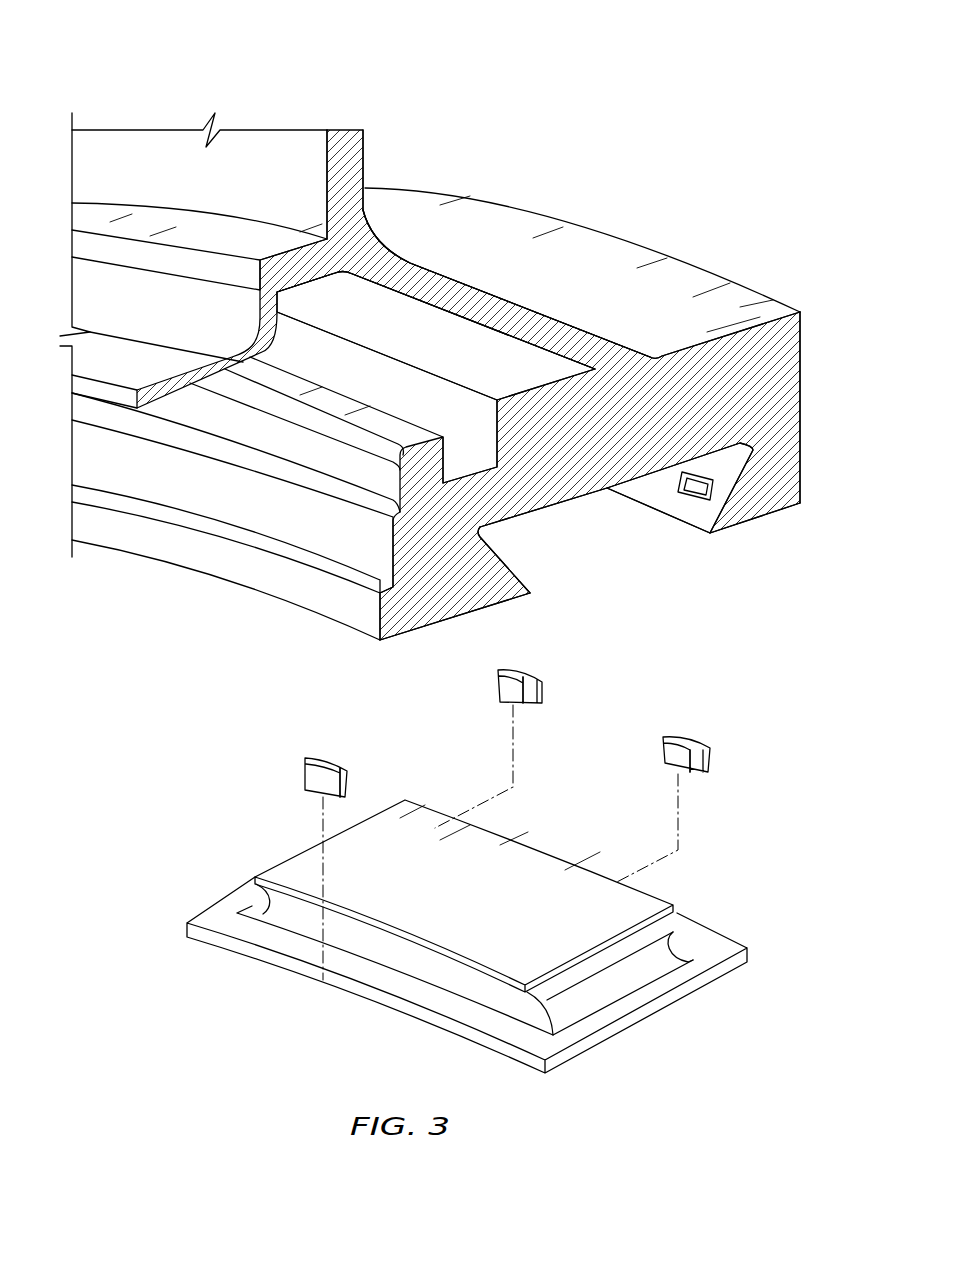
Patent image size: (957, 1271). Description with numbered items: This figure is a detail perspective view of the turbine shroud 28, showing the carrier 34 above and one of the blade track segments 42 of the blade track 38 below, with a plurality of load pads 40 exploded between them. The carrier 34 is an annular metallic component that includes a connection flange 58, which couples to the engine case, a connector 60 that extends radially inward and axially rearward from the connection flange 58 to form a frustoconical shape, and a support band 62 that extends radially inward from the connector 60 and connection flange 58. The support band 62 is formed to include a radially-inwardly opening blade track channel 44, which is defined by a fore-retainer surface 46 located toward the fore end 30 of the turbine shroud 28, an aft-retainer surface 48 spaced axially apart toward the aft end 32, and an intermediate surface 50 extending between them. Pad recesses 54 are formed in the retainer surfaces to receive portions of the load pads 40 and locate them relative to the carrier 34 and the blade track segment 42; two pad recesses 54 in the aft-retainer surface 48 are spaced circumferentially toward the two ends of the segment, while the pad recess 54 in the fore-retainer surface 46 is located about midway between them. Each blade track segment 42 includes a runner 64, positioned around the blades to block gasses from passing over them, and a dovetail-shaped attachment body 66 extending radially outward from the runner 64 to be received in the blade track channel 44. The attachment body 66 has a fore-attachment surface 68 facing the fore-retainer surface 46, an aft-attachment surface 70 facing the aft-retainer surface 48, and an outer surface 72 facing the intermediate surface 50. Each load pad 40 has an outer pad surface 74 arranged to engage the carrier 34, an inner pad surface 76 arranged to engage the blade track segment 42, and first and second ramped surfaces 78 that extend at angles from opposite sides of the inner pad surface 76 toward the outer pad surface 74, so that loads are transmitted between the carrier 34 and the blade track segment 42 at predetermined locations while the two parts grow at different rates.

The turbine shroud 28 is at (722, 188).
The fore end 30 is at (262, 601).
The aft end 32 is at (826, 452).
The carrier 34 is at (551, 305).
The blade track 38 is at (180, 840).
The load pads 40 is at (505, 789).
The blade track segments 42 is at (263, 827).
The blade track channel 44 is at (612, 545).
The fore-retainer surface 46 is at (522, 578).
The aft-retainer surface 48 is at (653, 490).
The intermediate surface 50 is at (561, 500).
The pad recess 54 is at (690, 490).
The connection flange 58 is at (365, 153).
The connector 60 is at (477, 287).
The support band 62 is at (757, 524).
The runner 64 is at (737, 946).
The attachment body 66 is at (640, 968).
The fore-attachment surface 68 is at (440, 970).
The aft-attachment surface 70 is at (676, 940).
The outer surface 72 is at (437, 836).
The outer pad surface 74 is at (314, 777).
The inner pad surface 76 is at (330, 760).
The ramped surfaces 78 is at (497, 688).